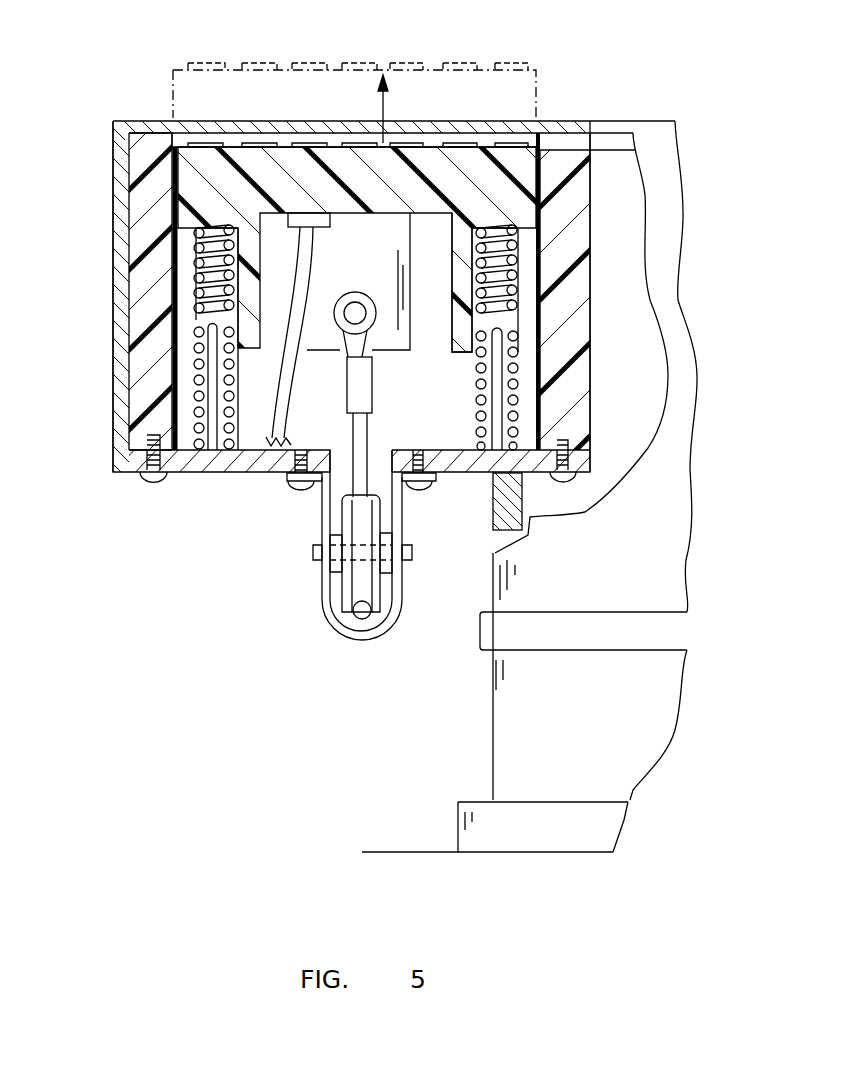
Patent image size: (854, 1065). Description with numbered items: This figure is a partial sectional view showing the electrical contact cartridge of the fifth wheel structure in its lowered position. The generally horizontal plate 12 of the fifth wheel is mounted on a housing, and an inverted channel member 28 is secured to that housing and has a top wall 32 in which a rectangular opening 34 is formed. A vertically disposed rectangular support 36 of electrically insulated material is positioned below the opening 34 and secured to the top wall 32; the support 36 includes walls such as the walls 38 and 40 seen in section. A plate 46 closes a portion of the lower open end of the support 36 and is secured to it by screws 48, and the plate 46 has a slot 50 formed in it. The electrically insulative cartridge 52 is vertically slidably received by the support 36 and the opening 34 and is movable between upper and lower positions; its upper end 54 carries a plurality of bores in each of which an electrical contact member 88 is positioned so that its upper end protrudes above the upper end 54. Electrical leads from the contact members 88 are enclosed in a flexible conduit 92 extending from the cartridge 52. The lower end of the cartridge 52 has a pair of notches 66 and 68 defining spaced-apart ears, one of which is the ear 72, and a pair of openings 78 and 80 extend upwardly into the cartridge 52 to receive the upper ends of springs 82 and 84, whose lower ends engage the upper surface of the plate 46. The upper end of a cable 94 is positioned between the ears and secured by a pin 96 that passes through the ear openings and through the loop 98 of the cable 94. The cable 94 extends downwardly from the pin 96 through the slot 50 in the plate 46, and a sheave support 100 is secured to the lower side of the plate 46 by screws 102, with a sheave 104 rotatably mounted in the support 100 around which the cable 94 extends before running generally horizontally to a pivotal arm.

The plate 12 is at (668, 96).
The inverted channel member 28 is at (108, 339).
The top wall 32 is at (155, 118).
The rectangular opening 34 is at (543, 122).
The rectangular support 36 is at (158, 223).
The wall 38 is at (150, 390).
The wall 40 is at (560, 352).
The plate 46 is at (243, 470).
The screws 48 is at (150, 478).
The slot 50 is at (388, 442).
The cartridge 52 is at (525, 192).
The upper end 54 is at (483, 147).
The notch 66 is at (275, 287).
The notch 68 is at (475, 300).
The ear 72 is at (354, 279).
The opening 78 is at (208, 228).
The opening 80 is at (500, 232).
The spring 82 is at (193, 408).
The spring 84 is at (518, 412).
The electrical contact member 88 is at (460, 145).
The flexible conduit 92 is at (262, 170).
The cable 94 is at (340, 429).
The pin 96 is at (358, 313).
The loop 98 is at (342, 340).
The sheave support 100 is at (325, 533).
The screws 102 is at (303, 481).
The sheave 104 is at (343, 580).